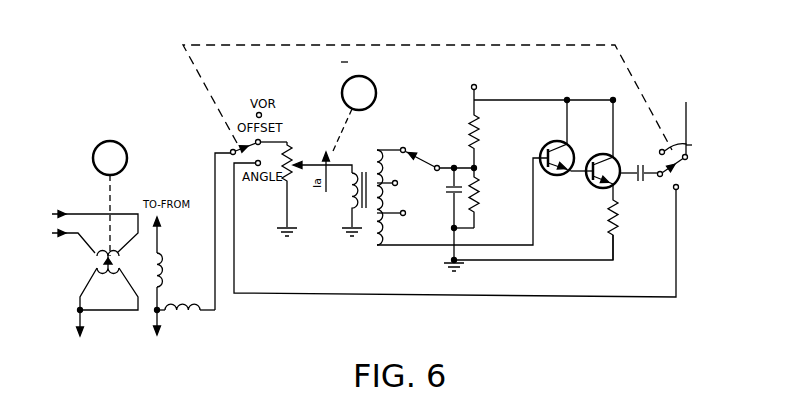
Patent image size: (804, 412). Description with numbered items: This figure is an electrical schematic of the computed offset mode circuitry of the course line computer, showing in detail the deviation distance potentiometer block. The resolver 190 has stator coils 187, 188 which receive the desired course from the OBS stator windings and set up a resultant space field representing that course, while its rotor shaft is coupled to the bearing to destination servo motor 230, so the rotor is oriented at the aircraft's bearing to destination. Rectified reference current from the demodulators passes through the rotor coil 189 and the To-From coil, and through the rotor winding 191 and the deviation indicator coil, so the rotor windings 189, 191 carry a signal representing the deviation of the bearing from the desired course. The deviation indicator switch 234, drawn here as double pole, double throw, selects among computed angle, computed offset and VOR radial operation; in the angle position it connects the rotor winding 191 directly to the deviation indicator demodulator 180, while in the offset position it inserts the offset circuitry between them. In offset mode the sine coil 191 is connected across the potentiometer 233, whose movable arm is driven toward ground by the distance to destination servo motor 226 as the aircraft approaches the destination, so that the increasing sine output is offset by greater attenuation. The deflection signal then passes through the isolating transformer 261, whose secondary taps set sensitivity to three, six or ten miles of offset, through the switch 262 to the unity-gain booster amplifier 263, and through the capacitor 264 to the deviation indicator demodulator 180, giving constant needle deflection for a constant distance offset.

The deviation indicator demodulator 180 is at (687, 112).
The stator coil of resolver 187 is at (118, 263).
The stator coil of resolver 188 is at (98, 272).
The rotor coil of resolver 189 is at (161, 264).
The resolver 190 is at (86, 269).
The rotor winding of resolver 191 is at (183, 311).
The distance to destination servo motor 226 is at (376, 93).
The bearing to destination servo motor 230 is at (127, 158).
The potentiometer 233 is at (288, 145).
The deviation indicator switch 234 is at (287, 49).
The isolating transformer 261 is at (365, 208).
The switch 262 is at (415, 155).
The booster amplifier 263 is at (530, 137).
The capacitor 264 is at (641, 158).